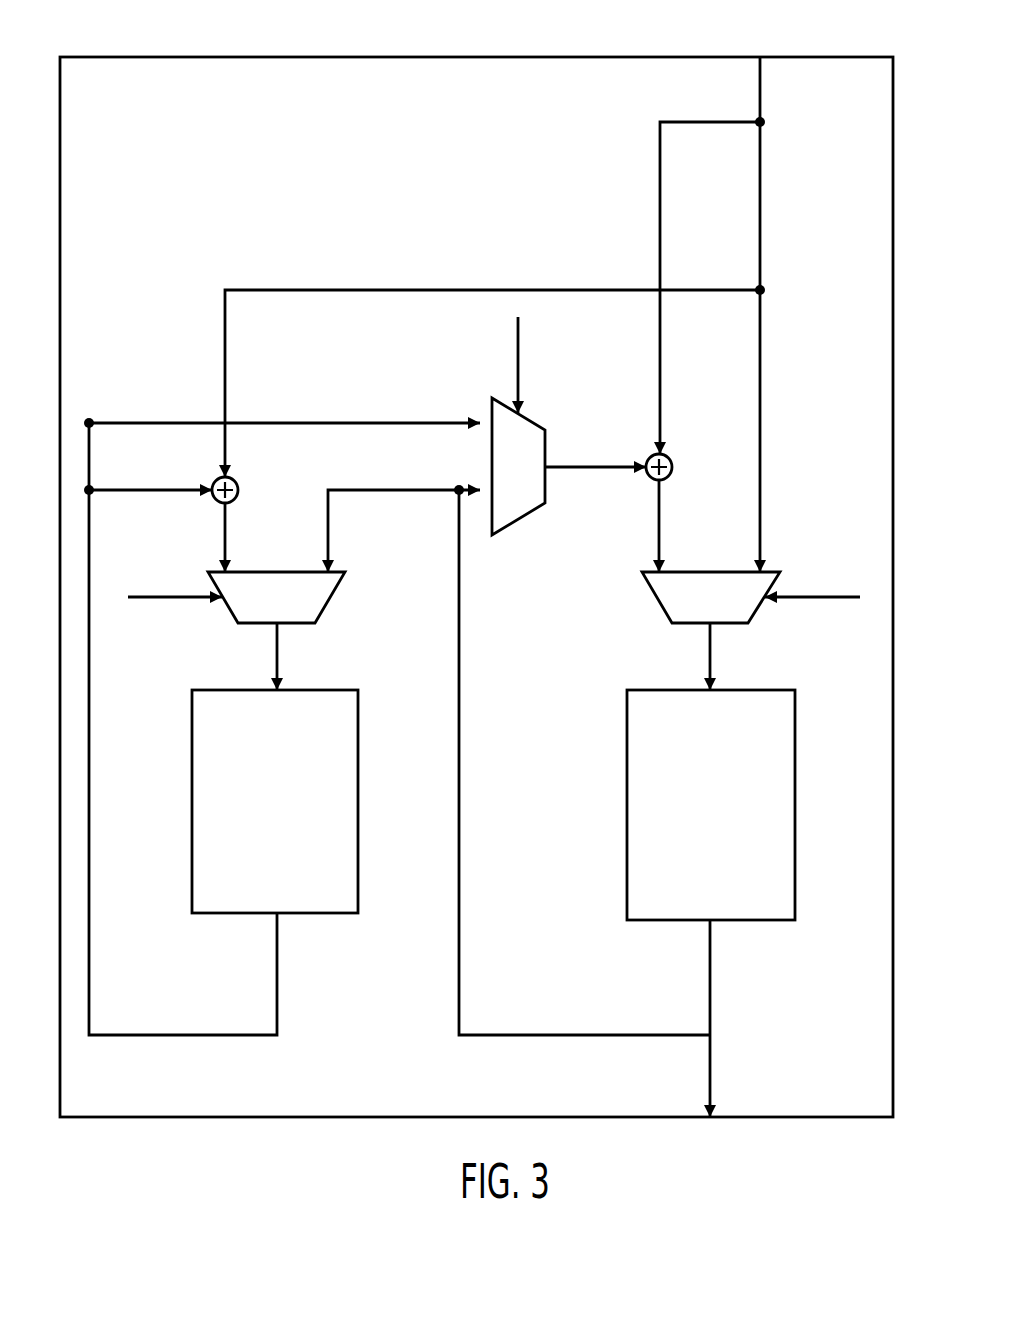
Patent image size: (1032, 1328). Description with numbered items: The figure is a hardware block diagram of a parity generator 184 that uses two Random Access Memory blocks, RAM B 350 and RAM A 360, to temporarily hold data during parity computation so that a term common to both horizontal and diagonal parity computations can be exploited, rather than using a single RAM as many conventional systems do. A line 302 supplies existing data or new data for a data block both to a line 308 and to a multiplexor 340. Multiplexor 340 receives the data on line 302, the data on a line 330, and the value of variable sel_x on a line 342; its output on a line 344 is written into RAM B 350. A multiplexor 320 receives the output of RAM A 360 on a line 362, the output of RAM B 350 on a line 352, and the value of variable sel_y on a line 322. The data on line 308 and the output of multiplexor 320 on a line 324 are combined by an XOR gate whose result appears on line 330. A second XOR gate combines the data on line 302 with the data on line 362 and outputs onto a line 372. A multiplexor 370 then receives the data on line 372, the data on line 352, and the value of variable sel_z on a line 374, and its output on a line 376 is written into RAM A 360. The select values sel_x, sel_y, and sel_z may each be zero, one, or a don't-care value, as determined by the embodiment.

The parity generator 184 is at (308, 107).
The line 302 is at (762, 67).
The line 308 is at (661, 356).
The multiplexor 320 is at (546, 436).
The line 322 is at (520, 347).
The line 324 is at (595, 470).
The line 330 is at (660, 525).
The multiplexor 340 is at (775, 572).
The line 342 is at (860, 597).
The line 344 is at (711, 659).
The RAM B 350 is at (690, 853).
The line 352 is at (711, 1000).
The RAM A 360 is at (255, 853).
The line 362 is at (278, 970).
The multiplexor 370 is at (340, 586).
The line 372 is at (226, 538).
The line 374 is at (128, 597).
The line 376 is at (278, 659).